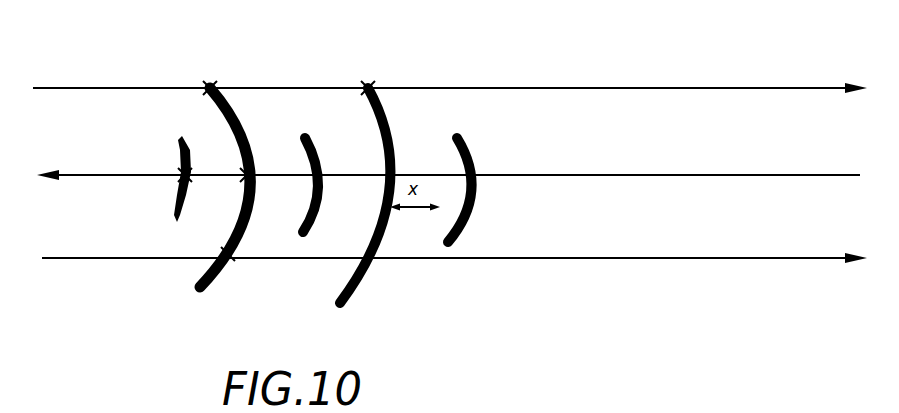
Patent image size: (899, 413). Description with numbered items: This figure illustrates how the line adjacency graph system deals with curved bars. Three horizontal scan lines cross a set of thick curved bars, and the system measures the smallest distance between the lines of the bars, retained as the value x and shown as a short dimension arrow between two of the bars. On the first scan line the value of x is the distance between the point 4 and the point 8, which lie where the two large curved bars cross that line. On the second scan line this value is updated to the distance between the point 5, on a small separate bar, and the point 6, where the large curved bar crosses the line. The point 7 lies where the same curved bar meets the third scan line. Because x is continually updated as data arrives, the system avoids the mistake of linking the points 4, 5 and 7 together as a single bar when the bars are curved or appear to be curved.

The point 4 is at (211, 166).
The point 5 is at (172, 179).
The point 6 is at (232, 161).
The point 7 is at (218, 239).
The point 8 is at (365, 174).